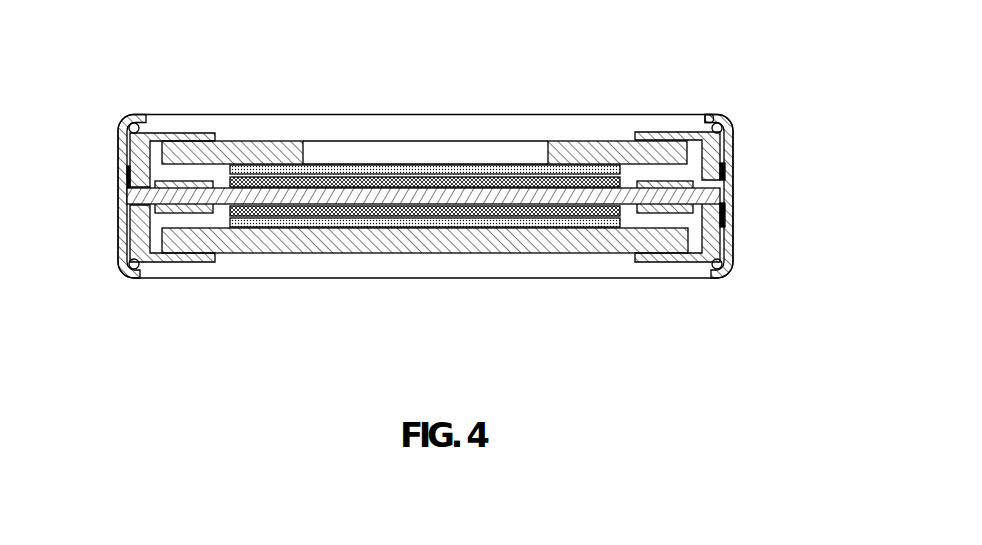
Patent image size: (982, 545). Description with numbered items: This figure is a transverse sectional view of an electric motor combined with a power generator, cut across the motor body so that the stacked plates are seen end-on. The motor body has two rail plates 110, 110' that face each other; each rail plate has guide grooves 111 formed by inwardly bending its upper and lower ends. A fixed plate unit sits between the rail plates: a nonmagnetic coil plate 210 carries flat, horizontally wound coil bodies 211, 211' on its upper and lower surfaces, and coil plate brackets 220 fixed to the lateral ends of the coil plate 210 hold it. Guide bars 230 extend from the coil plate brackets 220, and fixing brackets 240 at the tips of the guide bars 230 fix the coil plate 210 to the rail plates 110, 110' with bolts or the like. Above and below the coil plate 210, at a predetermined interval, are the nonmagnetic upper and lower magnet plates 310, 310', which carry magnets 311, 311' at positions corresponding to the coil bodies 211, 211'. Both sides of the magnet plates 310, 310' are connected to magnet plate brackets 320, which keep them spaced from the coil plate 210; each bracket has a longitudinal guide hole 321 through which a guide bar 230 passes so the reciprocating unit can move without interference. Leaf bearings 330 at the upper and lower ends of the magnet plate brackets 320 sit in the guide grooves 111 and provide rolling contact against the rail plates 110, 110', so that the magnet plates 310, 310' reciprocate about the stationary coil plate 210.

The rail plate 110 is at (474, 154).
The rail plate 110' is at (98, 158).
The guide groove 111 is at (725, 115).
The leaf bearing 330 is at (712, 117).
The magnet plate bracket 320 is at (718, 243).
The coil plate bracket 220 is at (670, 253).
The upper magnet plate 310 is at (424, 89).
The coil body 211 is at (425, 109).
The magnet 311 is at (425, 97).
The coil plate 210 is at (517, 183).
The guide bar 230 is at (733, 222).
The fixing bracket 240 is at (733, 181).
The guide hole 321 is at (733, 200).
The coil body 211' is at (425, 272).
The magnet 311' is at (425, 286).
The lower magnet plate 310' is at (425, 299).